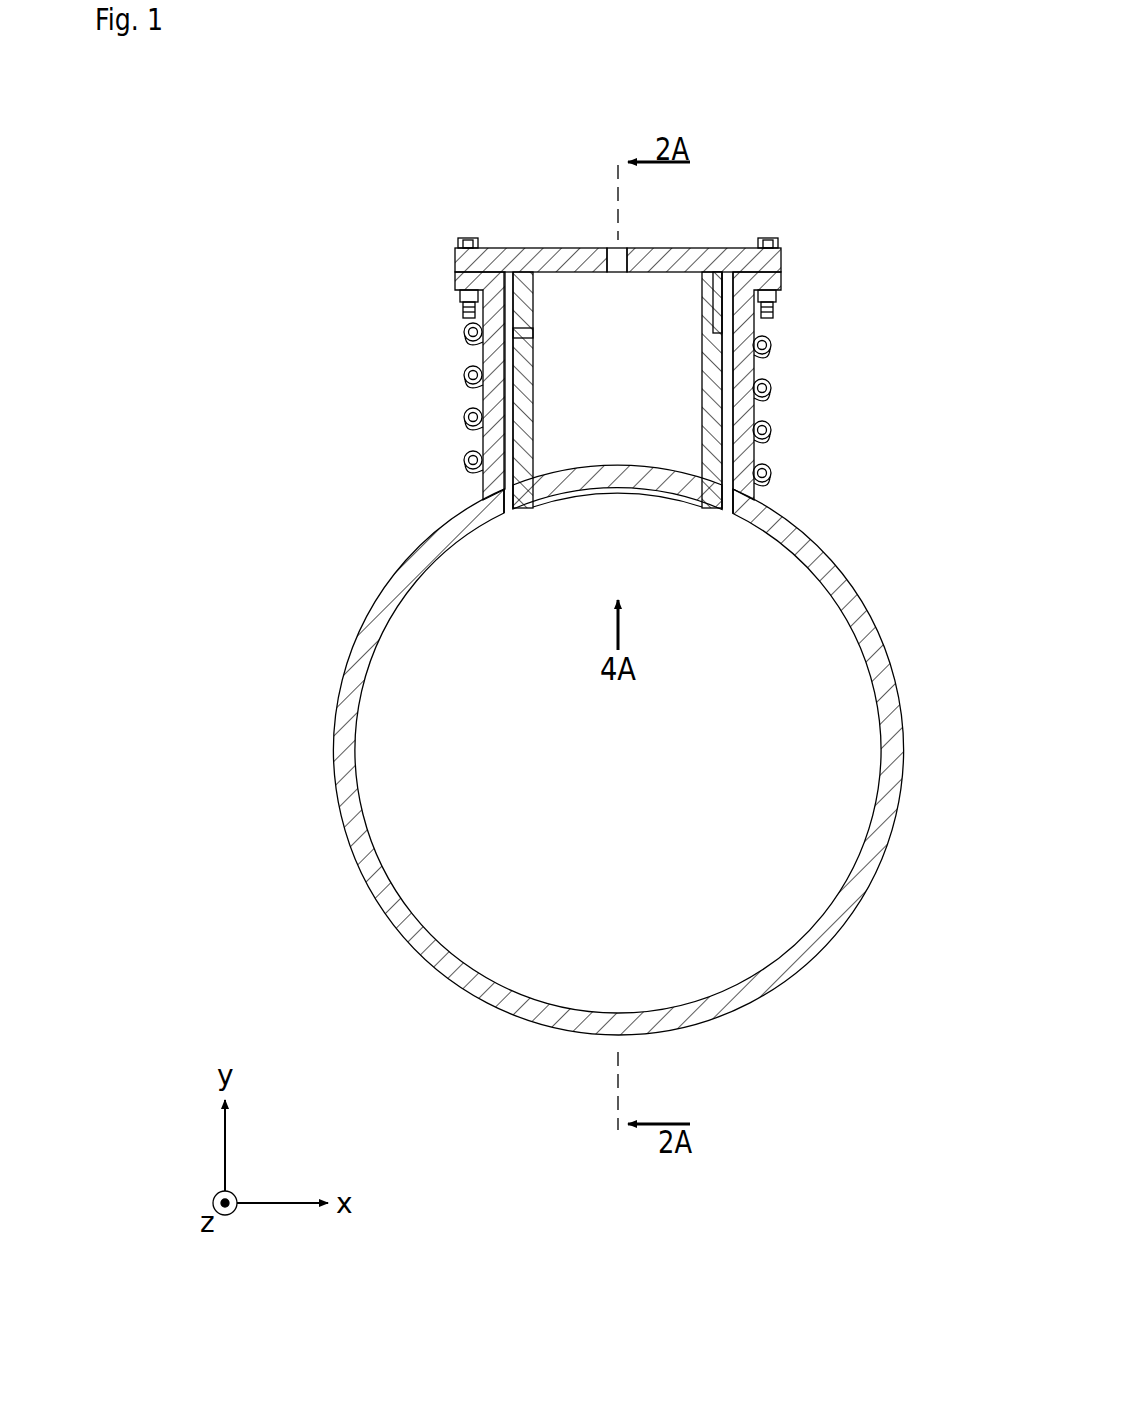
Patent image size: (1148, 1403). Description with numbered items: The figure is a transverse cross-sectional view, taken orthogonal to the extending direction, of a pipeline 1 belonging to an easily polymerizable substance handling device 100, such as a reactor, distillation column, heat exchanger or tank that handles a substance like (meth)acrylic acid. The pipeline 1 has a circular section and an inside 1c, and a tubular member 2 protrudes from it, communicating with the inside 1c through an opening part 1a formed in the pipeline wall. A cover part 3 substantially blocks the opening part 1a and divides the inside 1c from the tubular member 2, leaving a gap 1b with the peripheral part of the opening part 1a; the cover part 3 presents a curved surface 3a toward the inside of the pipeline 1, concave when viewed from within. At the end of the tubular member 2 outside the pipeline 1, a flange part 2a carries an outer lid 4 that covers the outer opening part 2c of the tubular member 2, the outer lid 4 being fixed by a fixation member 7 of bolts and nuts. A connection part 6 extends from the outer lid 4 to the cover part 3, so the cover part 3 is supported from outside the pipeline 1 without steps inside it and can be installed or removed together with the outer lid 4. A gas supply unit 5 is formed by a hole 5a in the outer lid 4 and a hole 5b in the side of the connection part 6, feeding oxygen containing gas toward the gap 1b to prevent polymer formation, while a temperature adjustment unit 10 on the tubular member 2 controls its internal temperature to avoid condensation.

The pipeline 1 is at (340, 712).
The opening part 1a is at (503, 512).
The gap 1b is at (514, 517).
The inside of the pipeline 1c is at (442, 798).
The tubular member 2 is at (745, 410).
The flange part 2a is at (765, 285).
The outer opening part 2c is at (570, 262).
The cover part 3 is at (645, 478).
The curved surface 3a is at (588, 492).
The outer lid 4 is at (517, 258).
The gas supply unit 5 is at (808, 134).
The hole 5a is at (622, 258).
The hole 5b is at (713, 328).
The connection part 6 is at (716, 375).
The fixation member 7 is at (790, 240).
The temperature adjustment unit 10 is at (458, 377).
The easily polymerizable substance handling device 100 is at (366, 562).